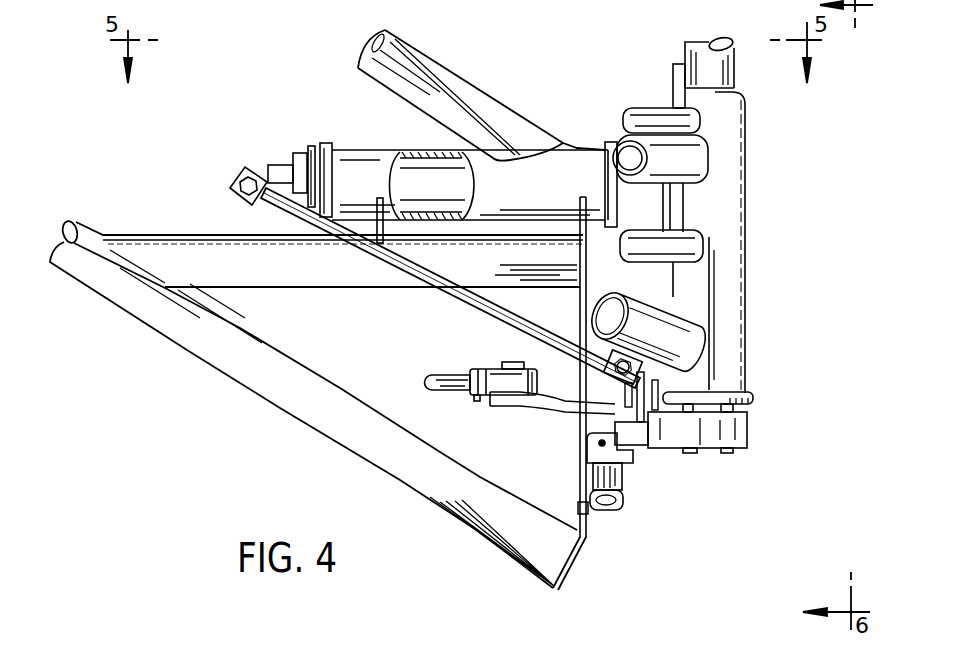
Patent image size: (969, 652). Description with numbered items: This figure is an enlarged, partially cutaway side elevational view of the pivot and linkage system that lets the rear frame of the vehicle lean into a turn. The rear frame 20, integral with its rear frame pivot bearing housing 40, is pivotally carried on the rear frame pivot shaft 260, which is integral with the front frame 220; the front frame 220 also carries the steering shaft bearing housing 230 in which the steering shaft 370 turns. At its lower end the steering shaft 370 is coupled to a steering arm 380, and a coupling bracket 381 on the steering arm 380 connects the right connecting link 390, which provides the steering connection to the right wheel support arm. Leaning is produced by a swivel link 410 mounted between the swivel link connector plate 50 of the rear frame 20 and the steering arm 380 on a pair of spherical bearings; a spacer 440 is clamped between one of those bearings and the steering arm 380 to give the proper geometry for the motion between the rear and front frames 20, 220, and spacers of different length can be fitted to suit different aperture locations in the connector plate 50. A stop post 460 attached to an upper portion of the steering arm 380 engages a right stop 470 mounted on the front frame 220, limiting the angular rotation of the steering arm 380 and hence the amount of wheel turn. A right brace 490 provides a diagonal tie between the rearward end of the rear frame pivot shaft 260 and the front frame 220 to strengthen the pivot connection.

The rear frame 20 is at (343, 452).
The rear frame pivot bearing housing 40 is at (348, 148).
The swivel link connector plate 50 is at (578, 516).
The front frame 220 is at (697, 318).
The steering shaft bearing housing 230 is at (747, 180).
The rear frame pivot shaft 260 is at (413, 152).
The steering shaft 370 is at (686, 60).
The steering arm 380 is at (750, 437).
The coupling bracket 381 is at (545, 406).
The right connecting link 390 is at (455, 375).
The swivel link 410 is at (607, 510).
The spacer 440 is at (592, 476).
The stop post 460 is at (645, 420).
The right stop 470 is at (655, 418).
The right brace 490 is at (488, 316).